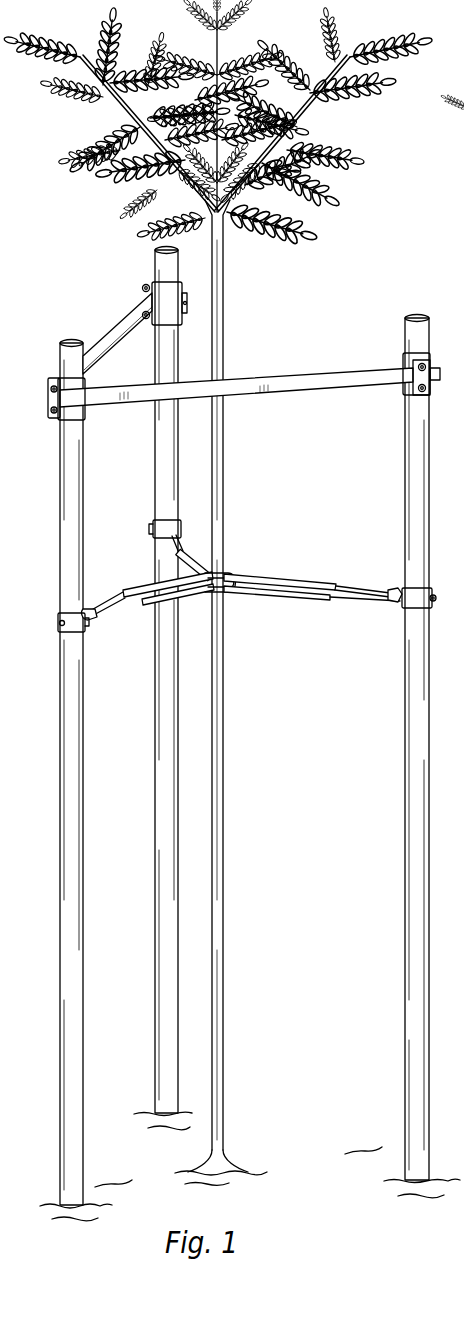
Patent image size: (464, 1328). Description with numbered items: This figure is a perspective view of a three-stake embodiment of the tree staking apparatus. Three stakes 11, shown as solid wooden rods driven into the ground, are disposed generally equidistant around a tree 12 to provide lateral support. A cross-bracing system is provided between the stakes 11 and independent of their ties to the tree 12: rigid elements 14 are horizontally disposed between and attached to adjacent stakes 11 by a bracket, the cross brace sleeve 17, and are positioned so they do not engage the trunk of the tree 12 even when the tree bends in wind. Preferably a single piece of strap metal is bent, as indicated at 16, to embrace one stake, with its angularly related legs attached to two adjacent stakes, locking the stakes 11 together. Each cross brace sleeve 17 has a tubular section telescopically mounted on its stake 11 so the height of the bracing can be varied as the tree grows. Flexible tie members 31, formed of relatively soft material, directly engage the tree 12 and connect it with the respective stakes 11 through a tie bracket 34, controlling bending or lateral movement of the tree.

The stakes 11 is at (161, 935).
The tree 12 is at (222, 510).
The rigid elements 14 is at (112, 327).
The bend 16 is at (68, 421).
The cross brace sleeve 17 is at (150, 286).
The flexible tie members 31 is at (153, 565).
The tie bracket 34 is at (155, 525).